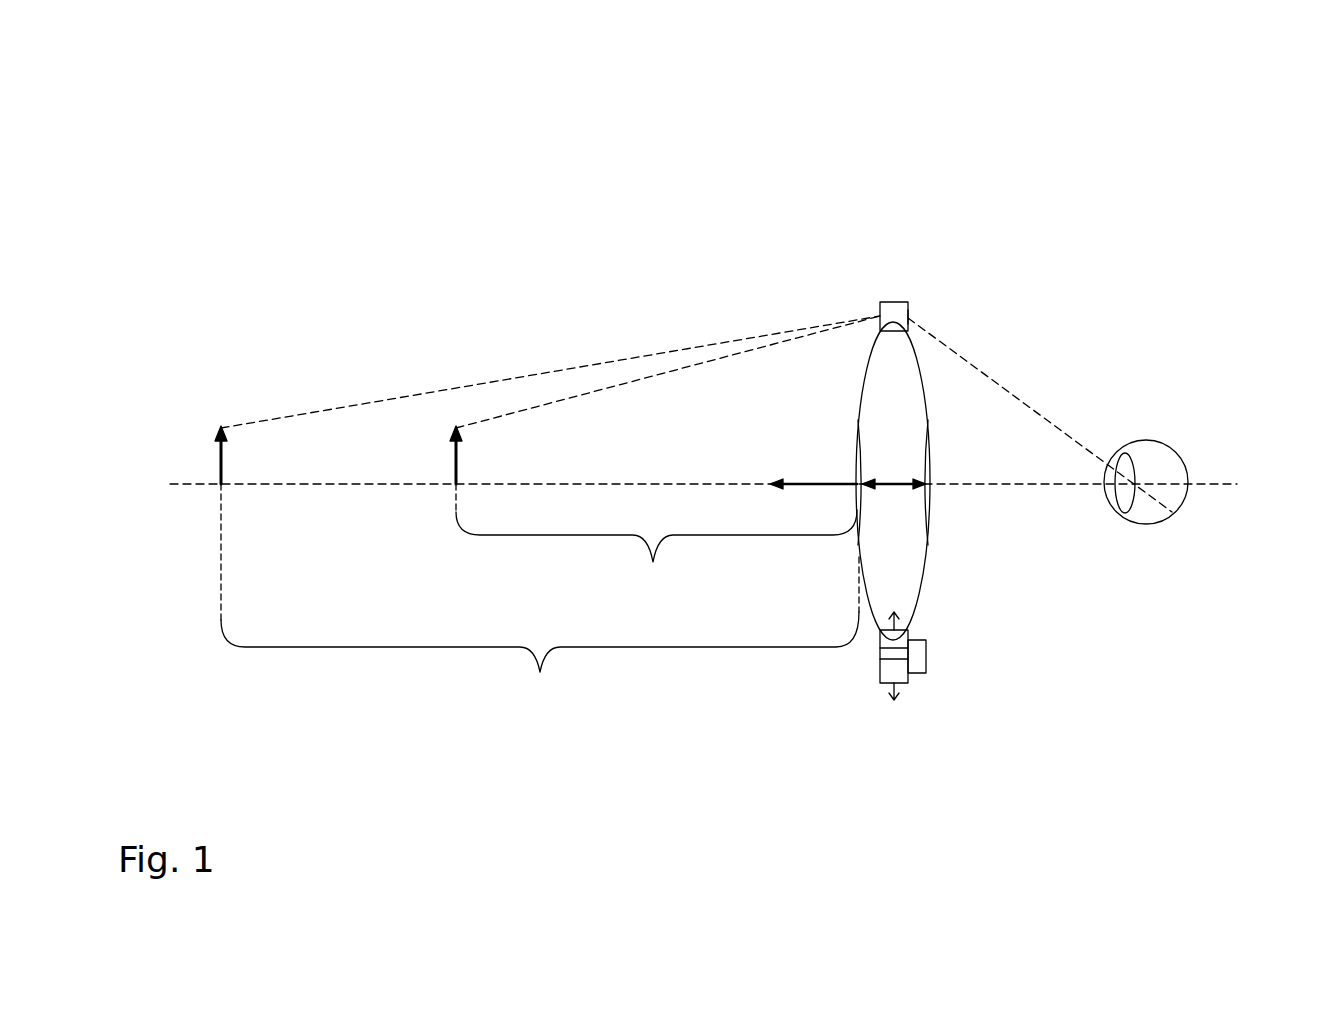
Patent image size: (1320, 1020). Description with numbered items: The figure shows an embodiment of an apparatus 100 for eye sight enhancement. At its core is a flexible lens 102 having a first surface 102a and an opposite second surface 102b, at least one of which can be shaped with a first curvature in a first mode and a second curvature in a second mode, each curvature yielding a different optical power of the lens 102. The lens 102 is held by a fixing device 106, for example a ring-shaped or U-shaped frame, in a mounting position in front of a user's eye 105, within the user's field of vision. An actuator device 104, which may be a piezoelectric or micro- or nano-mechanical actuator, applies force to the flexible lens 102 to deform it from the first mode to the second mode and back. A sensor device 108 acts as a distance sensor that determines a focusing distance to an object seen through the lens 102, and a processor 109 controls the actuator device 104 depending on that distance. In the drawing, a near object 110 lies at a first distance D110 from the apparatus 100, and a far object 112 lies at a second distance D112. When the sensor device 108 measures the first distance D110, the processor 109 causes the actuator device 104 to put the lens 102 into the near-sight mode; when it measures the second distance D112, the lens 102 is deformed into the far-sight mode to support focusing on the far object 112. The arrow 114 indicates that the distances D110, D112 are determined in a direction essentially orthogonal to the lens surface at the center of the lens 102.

The apparatus 100 is at (880, 245).
The flexible lens 102 is at (895, 362).
The first surface 102a is at (862, 380).
The second surface 102b is at (923, 387).
The actuator device 104 is at (890, 663).
The user's eye 105 is at (1155, 468).
The fixing device 106 is at (893, 308).
The sensor device 108 is at (907, 317).
The processor 109 is at (918, 664).
The near object 110 is at (450, 435).
The far object 112 is at (216, 435).
The arrow 114 is at (812, 484).
The first distance D110 is at (656, 541).
The second distance D112 is at (540, 597).